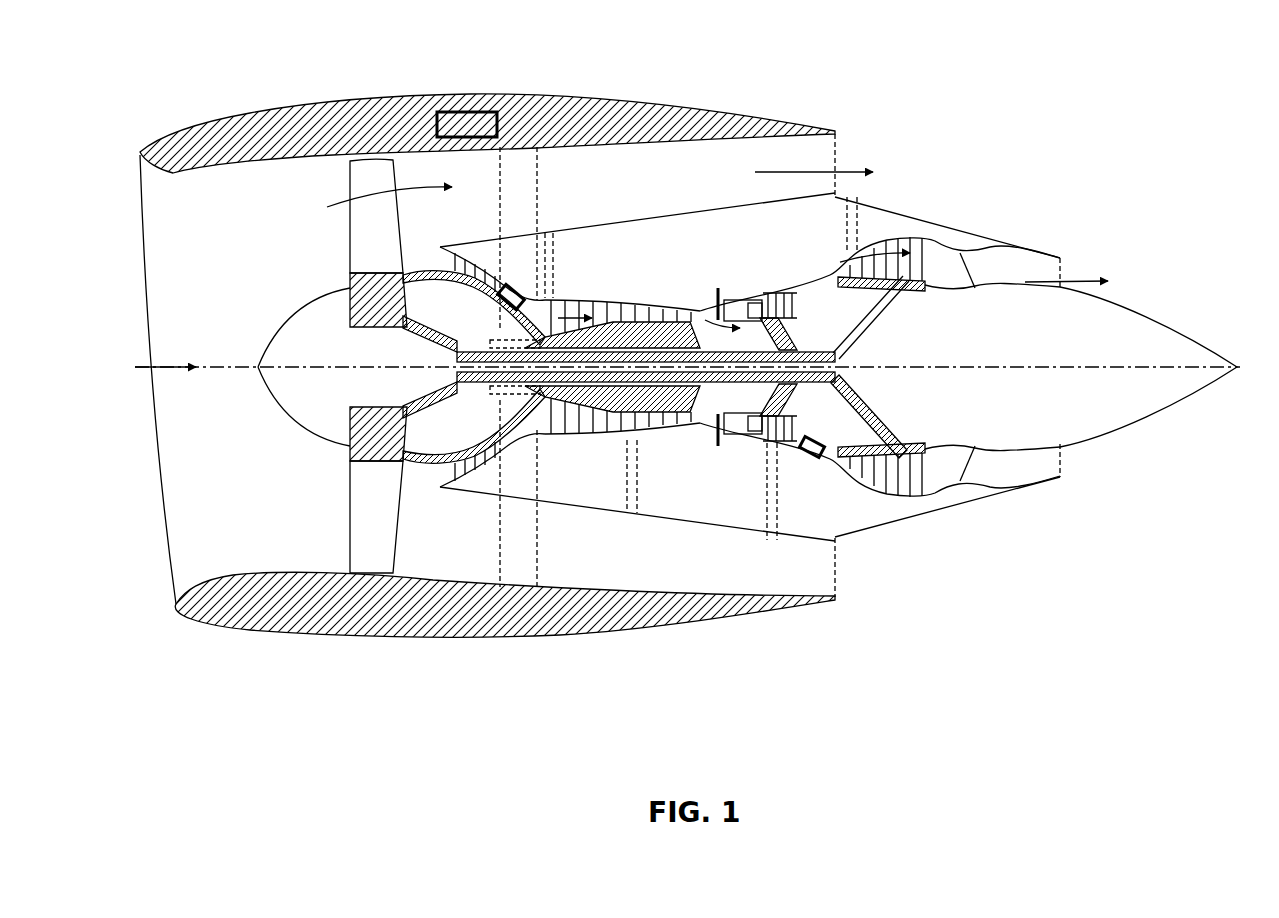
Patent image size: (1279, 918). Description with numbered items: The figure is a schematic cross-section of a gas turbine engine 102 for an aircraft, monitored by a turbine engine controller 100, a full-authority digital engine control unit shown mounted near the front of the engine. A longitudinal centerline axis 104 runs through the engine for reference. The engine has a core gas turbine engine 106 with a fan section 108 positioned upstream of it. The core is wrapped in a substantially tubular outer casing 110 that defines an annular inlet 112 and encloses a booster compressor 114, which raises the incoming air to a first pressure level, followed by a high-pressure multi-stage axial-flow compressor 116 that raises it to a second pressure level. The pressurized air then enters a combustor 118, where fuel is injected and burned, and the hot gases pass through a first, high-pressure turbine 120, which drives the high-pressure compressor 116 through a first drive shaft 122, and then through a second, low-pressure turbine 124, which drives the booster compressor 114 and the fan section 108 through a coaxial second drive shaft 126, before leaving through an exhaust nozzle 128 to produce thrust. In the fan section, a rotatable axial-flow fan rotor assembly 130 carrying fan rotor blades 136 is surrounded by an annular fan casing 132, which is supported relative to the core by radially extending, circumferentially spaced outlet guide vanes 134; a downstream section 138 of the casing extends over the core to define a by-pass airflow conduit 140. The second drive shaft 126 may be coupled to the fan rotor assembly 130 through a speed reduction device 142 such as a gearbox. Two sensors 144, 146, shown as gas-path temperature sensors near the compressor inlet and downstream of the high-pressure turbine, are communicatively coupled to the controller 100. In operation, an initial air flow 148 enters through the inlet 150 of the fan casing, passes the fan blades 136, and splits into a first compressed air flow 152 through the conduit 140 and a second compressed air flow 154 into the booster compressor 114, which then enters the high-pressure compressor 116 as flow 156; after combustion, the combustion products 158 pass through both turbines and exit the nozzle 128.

The turbine engine controller 100 is at (468, 112).
The gas turbine engine 102 is at (976, 105).
The longitudinal or axial centerline axis 104 is at (1010, 363).
The core gas turbine engine 106 is at (702, 256).
The fan section 108 is at (386, 87).
The outer casing 110 is at (683, 527).
The annular inlet 112 is at (443, 472).
The booster compressor 114 is at (503, 437).
The high-pressure multi-stage axial-flow compressor 116 is at (567, 430).
The combustor 118 is at (727, 443).
The first (high-pressure) turbine 120 is at (866, 420).
The first (high-pressure) drive shaft 122 is at (755, 330).
The second (low-pressure) turbine 124 is at (920, 498).
The second (low-pressure) drive shaft 126 is at (500, 345).
The exhaust nozzle 128 is at (1065, 264).
The fan rotor assembly 130 is at (402, 332).
The fan casing 132 is at (393, 637).
The outlet guide vanes 134 is at (537, 168).
The fan rotor blades 136 is at (350, 528).
The downstream section of the fan casing 138 is at (746, 110).
The by-pass airflow conduit 140 is at (684, 176).
The speed reduction device 142 is at (498, 457).
The sensor 144 is at (513, 289).
The sensor 146 is at (808, 452).
The initial air flow 148 is at (165, 360).
The inlet 150 is at (170, 578).
The first compressed air flow 152 is at (362, 198).
The second compressed air flow 154 is at (420, 263).
The air flow entering high-pressure compressor 156 is at (558, 303).
The combustion products 158 is at (784, 300).